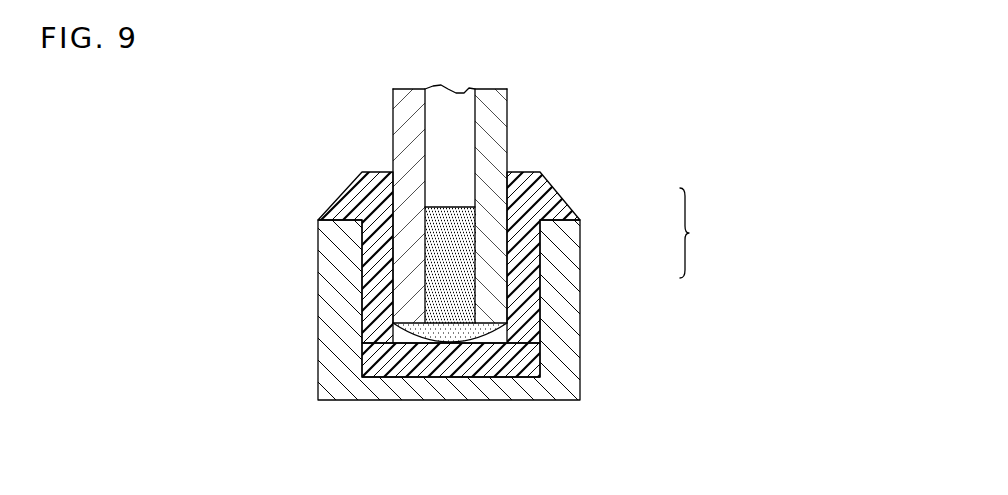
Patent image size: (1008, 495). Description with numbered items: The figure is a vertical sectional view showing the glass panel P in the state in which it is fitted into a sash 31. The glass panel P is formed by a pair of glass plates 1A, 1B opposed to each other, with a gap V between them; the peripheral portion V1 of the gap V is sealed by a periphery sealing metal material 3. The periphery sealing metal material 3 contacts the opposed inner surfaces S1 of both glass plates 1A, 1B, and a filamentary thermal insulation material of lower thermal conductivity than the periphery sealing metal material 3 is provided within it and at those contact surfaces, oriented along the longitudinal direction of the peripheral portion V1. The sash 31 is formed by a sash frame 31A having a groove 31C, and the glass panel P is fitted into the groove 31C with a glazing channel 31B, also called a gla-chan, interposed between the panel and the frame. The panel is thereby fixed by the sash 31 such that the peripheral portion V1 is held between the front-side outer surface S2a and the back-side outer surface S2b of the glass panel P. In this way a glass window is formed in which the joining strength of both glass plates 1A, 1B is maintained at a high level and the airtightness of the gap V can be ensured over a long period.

The glass panel P is at (540, 127).
The glass plate 1A is at (503, 113).
The glass plate 1B is at (400, 127).
The gap V is at (446, 118).
The peripheral portion V1 is at (493, 367).
The opposed inner surface S1 is at (435, 160).
The front-side outer surface S2a is at (543, 352).
The back-side outer surface S2b is at (392, 298).
The periphery sealing metal material 3 is at (450, 343).
The sash 31 is at (698, 233).
The sash frame 31A is at (563, 260).
The glazing channel 31B is at (547, 193).
The groove 31C is at (535, 305).